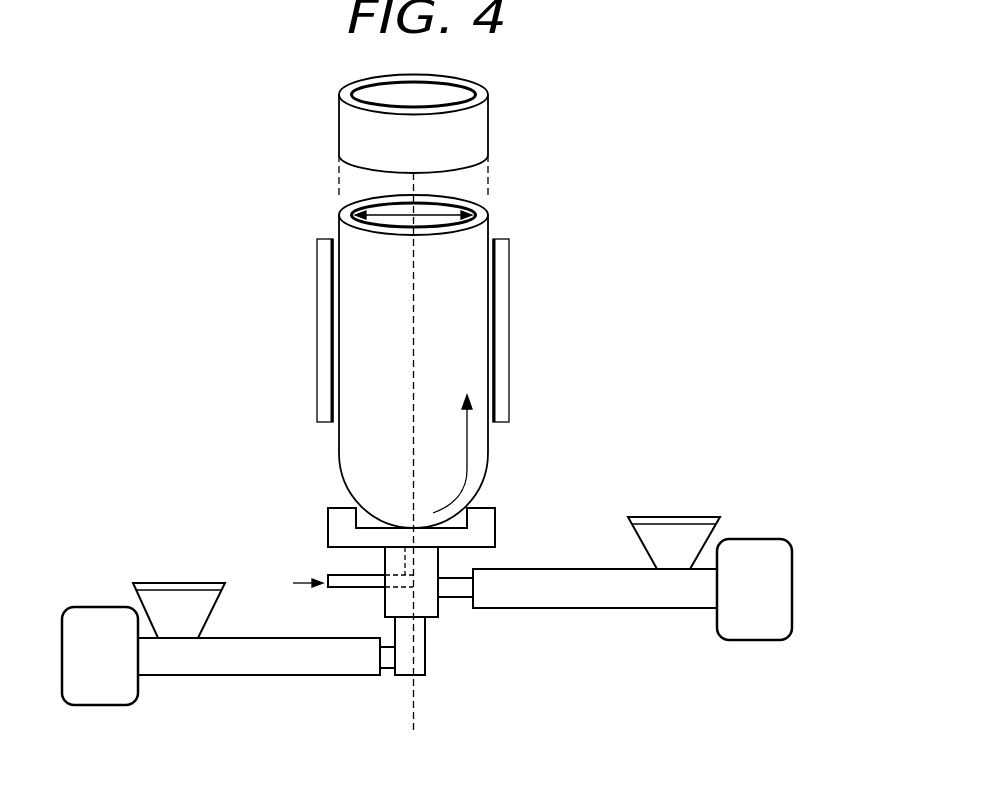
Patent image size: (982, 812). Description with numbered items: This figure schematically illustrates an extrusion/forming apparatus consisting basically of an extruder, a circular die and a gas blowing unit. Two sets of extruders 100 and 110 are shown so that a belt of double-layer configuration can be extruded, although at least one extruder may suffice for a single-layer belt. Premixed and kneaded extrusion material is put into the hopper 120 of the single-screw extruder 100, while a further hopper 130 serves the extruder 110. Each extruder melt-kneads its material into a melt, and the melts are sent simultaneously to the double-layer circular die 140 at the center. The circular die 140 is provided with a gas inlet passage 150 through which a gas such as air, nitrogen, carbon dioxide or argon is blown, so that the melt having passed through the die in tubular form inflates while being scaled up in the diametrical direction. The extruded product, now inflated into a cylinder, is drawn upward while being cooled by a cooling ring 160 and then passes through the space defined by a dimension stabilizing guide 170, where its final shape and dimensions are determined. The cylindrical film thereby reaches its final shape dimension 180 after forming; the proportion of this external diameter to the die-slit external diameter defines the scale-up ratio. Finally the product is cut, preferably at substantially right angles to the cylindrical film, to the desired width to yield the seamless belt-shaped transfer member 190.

The extruder 100 is at (287, 660).
The extruder 110 is at (620, 597).
The hopper 120 is at (177, 600).
The hopper 130 is at (678, 537).
The circular die 140 is at (428, 605).
The gas inlet passage 150 is at (346, 577).
The cooling ring 160 is at (336, 511).
The dimension stabilizing guide 170 is at (320, 325).
The shape dimension 180 is at (448, 213).
The seamless belt-shaped transfer member 190 is at (350, 117).